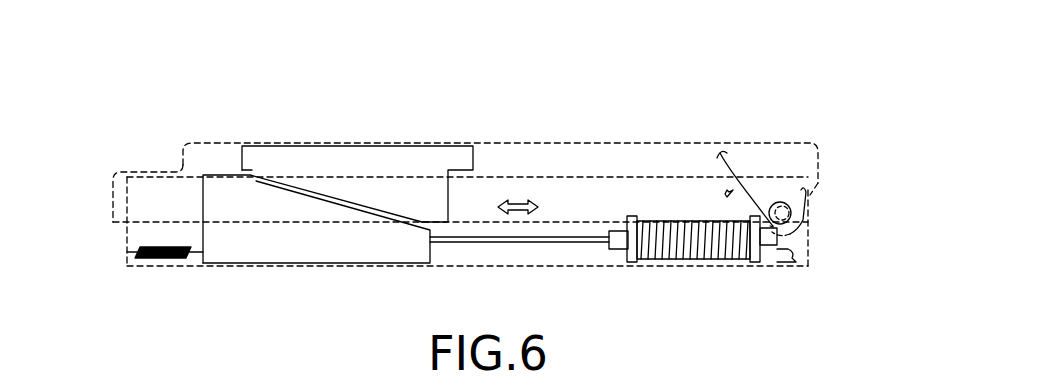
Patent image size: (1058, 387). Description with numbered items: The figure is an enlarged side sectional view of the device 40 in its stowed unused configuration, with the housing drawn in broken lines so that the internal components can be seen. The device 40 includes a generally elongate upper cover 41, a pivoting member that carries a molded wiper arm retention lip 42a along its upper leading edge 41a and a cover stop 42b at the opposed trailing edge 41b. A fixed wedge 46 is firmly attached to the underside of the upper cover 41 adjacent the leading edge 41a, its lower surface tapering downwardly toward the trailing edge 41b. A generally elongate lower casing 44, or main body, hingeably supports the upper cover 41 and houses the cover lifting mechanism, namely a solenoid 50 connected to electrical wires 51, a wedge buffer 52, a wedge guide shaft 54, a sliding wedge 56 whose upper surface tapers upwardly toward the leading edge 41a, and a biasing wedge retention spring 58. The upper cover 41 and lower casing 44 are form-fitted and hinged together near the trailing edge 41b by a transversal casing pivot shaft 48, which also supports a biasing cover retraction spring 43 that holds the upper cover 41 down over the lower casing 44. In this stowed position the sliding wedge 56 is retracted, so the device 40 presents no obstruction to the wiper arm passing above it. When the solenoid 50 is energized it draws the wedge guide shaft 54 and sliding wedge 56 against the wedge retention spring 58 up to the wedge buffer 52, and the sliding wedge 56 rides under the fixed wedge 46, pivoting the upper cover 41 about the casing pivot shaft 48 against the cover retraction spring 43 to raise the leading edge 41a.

The device 40 is at (624, 124).
The upper cover 41 is at (497, 143).
The leading edge 41a is at (108, 195).
The trailing edge 41b is at (805, 142).
The wiper arm retention lip 42a is at (180, 163).
The cover stop 42b is at (818, 172).
The cover retraction spring 43 is at (735, 160).
The lower casing 44 is at (255, 268).
The fixed wedge 46 is at (373, 162).
The casing pivot shaft 48 is at (812, 223).
The solenoid 50 is at (722, 252).
The electrical wires 51 is at (788, 263).
The wedge buffer 52 is at (612, 250).
The wedge guide shaft 54 is at (525, 241).
The sliding wedge 56 is at (314, 246).
The wedge retention spring 58 is at (158, 259).